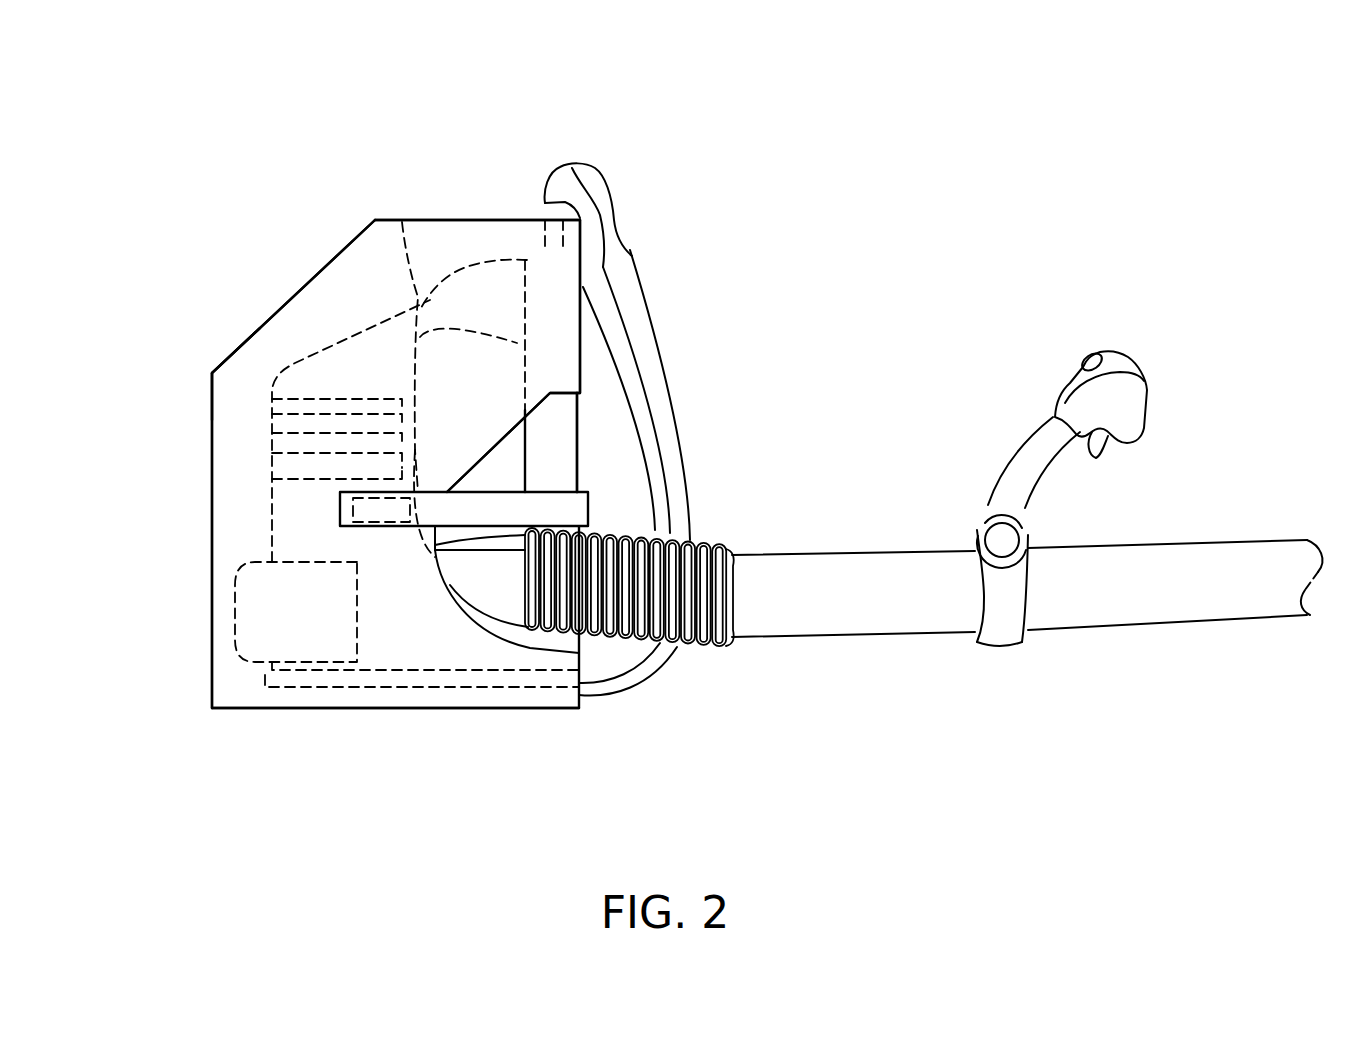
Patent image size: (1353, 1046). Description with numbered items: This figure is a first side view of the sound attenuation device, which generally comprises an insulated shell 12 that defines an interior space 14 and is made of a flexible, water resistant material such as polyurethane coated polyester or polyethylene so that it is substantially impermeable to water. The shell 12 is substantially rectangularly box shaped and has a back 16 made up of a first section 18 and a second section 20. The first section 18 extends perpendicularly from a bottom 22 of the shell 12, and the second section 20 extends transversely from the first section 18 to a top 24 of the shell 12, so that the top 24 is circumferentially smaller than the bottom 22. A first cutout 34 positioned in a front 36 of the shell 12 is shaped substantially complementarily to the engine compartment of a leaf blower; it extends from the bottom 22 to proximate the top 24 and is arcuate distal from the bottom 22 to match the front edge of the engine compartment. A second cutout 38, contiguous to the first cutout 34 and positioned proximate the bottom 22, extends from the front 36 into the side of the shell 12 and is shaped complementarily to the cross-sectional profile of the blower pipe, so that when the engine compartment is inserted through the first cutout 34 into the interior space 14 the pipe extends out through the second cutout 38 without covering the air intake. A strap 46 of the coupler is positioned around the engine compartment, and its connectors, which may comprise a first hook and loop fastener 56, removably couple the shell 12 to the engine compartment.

The shell 12 is at (340, 250).
The interior space 14 is at (402, 218).
The back 16 is at (211, 403).
The first section 18 is at (212, 497).
The second section 20 is at (284, 306).
The bottom 22 is at (367, 708).
The top 24 is at (468, 220).
The first cutout 34 is at (580, 447).
The front 36 is at (583, 287).
The second cutout 38 is at (500, 568).
The strap 46 is at (648, 348).
The first hook and loop fastener 56 is at (372, 508).